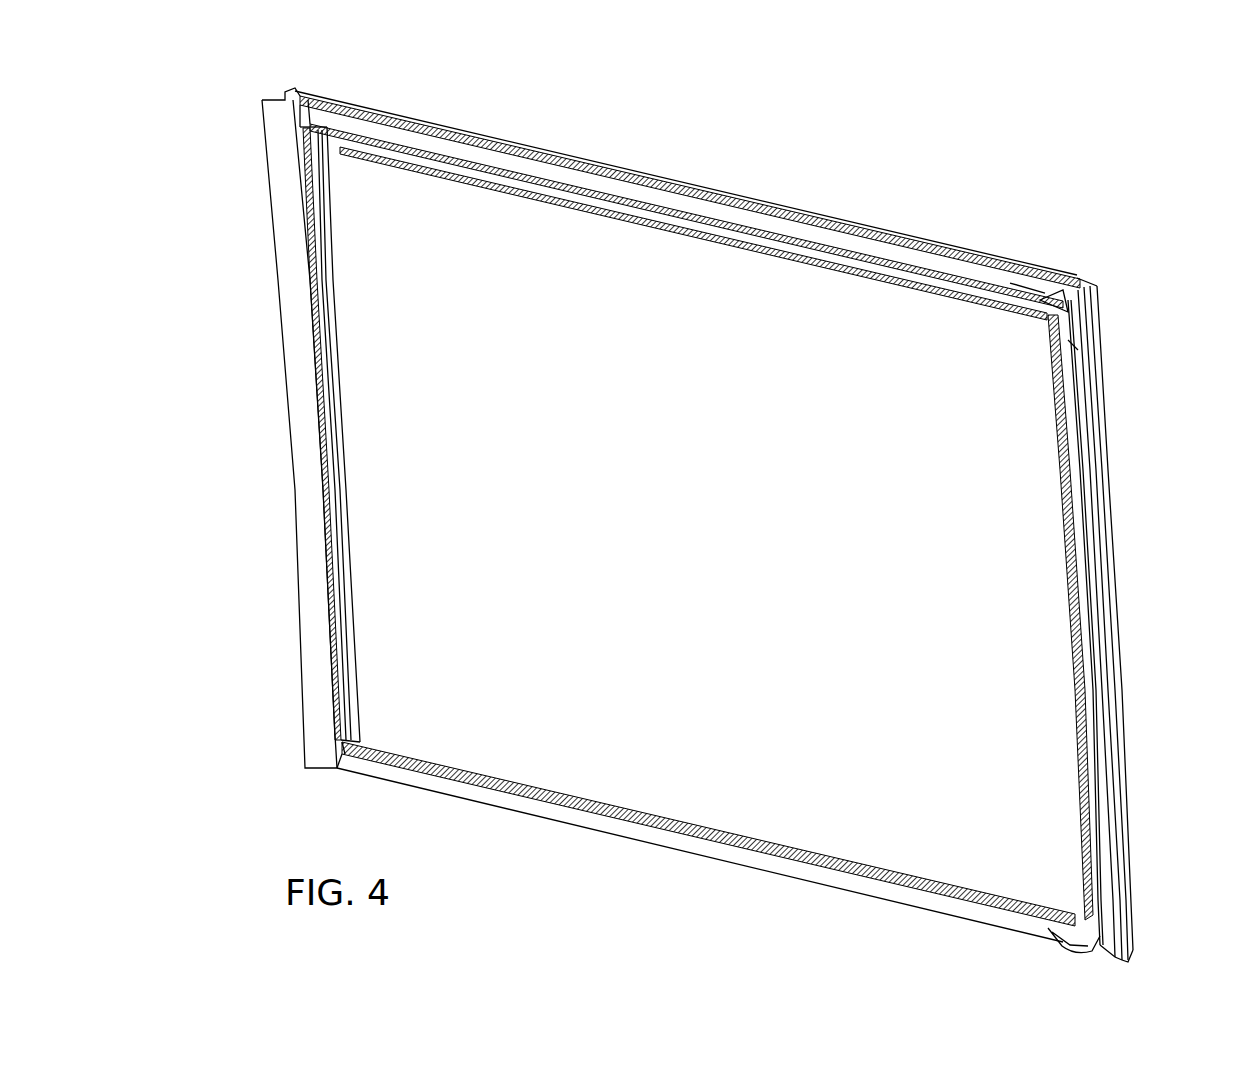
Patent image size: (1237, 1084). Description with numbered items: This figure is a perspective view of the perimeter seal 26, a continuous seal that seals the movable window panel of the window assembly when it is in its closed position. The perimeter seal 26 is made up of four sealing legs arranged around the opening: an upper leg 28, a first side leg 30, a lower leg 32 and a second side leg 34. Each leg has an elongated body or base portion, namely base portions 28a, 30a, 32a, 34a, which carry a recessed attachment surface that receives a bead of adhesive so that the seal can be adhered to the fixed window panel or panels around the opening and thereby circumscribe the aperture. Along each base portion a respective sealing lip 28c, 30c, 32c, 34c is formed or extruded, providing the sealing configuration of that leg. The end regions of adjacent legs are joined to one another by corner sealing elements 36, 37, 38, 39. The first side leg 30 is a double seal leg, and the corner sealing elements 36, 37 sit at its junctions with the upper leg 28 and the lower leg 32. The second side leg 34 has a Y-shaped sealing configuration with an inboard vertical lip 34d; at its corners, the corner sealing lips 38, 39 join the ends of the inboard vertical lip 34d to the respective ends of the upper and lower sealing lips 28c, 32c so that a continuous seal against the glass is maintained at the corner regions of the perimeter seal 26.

The perimeter seal 26 is at (1005, 177).
The upper leg 28 is at (748, 154).
The base portion of upper leg 28a is at (855, 230).
The sealing lip of upper leg 28c is at (778, 237).
The first side leg 30 is at (1154, 657).
The base portion of first side leg 30a is at (1108, 488).
The sealing lip of first side leg 30c is at (1072, 537).
The lower leg 32 is at (535, 844).
The base portion of lower leg 32a is at (655, 848).
The sealing lip of lower leg 32c is at (643, 815).
The second side leg 34 is at (245, 381).
The base portion of second side leg 34a is at (348, 503).
The sealing lip of second side leg 34c is at (300, 557).
The inboard vertical lip 34d is at (315, 295).
The corner sealing element 36 is at (1052, 298).
The corner sealing element 37 is at (1082, 945).
The corner sealing lip 38 is at (308, 140).
The corner sealing lip 39 is at (350, 742).